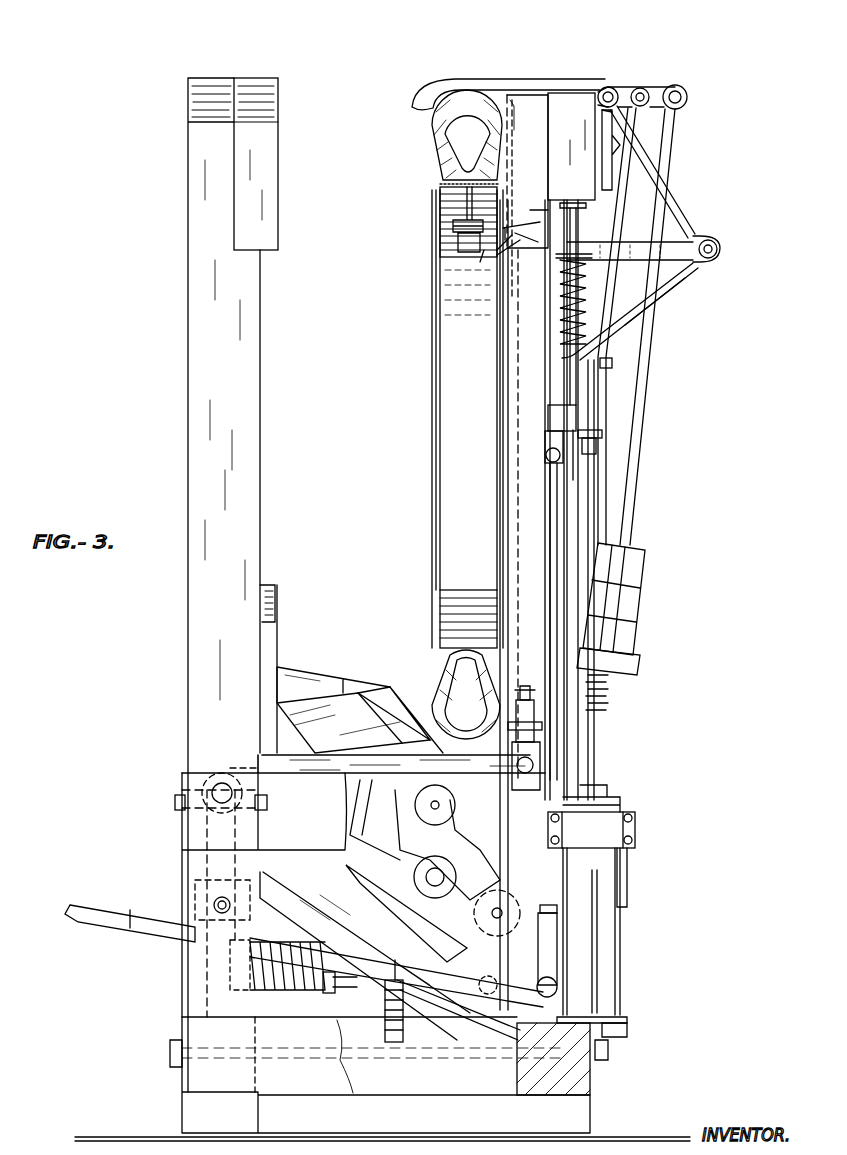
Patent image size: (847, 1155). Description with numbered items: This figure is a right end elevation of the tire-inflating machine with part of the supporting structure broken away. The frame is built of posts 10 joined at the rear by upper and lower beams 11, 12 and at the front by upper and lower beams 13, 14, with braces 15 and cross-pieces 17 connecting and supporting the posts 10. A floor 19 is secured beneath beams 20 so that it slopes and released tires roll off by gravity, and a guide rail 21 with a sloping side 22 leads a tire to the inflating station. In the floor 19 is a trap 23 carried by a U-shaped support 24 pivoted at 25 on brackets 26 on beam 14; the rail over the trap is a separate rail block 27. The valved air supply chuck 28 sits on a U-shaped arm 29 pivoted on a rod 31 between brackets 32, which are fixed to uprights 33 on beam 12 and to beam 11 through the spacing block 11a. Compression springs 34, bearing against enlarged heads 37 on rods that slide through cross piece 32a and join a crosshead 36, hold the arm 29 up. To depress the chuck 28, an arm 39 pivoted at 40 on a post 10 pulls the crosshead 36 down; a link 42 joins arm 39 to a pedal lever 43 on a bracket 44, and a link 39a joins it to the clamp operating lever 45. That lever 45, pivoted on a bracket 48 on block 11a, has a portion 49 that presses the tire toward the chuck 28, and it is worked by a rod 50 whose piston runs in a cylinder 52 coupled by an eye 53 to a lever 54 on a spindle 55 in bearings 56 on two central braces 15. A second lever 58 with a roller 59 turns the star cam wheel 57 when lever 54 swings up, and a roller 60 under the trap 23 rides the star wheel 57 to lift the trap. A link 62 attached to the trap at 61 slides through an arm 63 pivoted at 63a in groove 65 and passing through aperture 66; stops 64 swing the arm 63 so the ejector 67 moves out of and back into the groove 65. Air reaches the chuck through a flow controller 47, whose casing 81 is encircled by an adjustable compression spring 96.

The post 10 is at (205, 383).
The upper rear beam 11 is at (533, 105).
The spacing block 11a is at (590, 180).
The lower rear beam 12 is at (590, 1082).
The upper front beam 13 is at (258, 160).
The lower front beam 14 is at (210, 862).
The brace 15 is at (303, 866).
The cross-piece 17 is at (325, 1082).
The floor 19 is at (445, 748).
The beam 20 is at (270, 600).
The guide rail 21 is at (298, 700).
The sloping side 22 is at (372, 720).
The trap 23 is at (472, 728).
The U-shaped support 24 is at (375, 820).
The pivot 25 is at (200, 790).
The bracket 26 is at (175, 800).
The rail block 27 is at (360, 690).
The valved air supply chuck 28 is at (476, 246).
The U-shaped arm 29 is at (690, 270).
The rod 31 is at (716, 246).
The bracket 32 is at (672, 232).
The cross piece 32a is at (650, 332).
The upright 33 is at (568, 478).
The compression spring 34 is at (586, 300).
The crosshead 36 is at (606, 368).
The enlarged head 37 is at (643, 249).
The arm 39 is at (548, 440).
The link 39a is at (628, 220).
The pivot 40 is at (548, 418).
The link 42 is at (548, 586).
The pedal lever 43 is at (100, 915).
The bracket 44 is at (612, 1030).
The clamp operating lever 45 is at (657, 95).
The flow controller 47 is at (378, 1000).
The bracket 48 is at (612, 115).
The clamp portion 49 is at (440, 98).
The rod 50 is at (650, 352).
The cylinder 52 is at (636, 604).
The eye 53 is at (570, 1007).
The lever 54 is at (548, 940).
The spindle 55 is at (436, 872).
The bearing 56 is at (385, 875).
The star cam wheel 57 is at (460, 832).
The second lever 58 is at (540, 942).
The roller 59 is at (510, 890).
The roller 60 is at (452, 812).
The connection 61 is at (534, 766).
The link 62 is at (565, 378).
The arm 63 is at (524, 250).
The pivot 63a is at (480, 262).
The stop 64 is at (578, 212).
The groove 65 is at (467, 137).
The aperture 66 is at (505, 258).
The ejector 67 is at (510, 118).
The casing 81 is at (340, 990).
The compression spring 96 is at (294, 993).